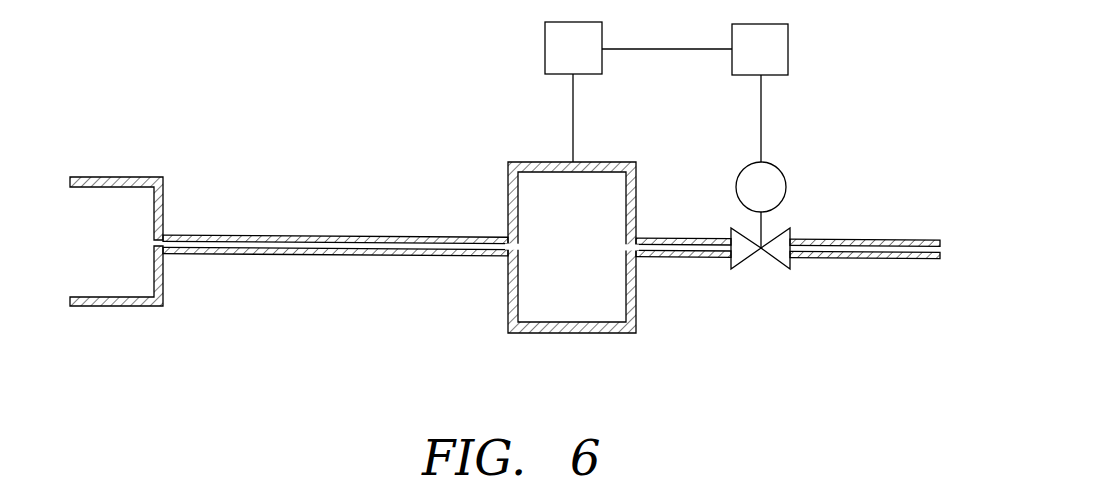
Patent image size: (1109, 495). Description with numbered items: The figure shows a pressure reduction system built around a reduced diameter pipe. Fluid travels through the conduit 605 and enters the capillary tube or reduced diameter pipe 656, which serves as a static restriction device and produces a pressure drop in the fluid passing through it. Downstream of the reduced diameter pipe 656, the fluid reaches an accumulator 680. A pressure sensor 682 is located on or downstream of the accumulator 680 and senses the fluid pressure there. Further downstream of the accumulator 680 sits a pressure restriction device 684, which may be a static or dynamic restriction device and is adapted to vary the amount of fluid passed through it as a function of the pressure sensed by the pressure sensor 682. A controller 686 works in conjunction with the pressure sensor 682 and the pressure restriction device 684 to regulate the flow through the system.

The conduit 605 is at (125, 213).
The reduced diameter pipe 656 is at (315, 235).
The accumulator 680 is at (597, 298).
The pressure sensor 682 is at (563, 50).
The pressure restriction device 684 is at (790, 228).
The controller 686 is at (760, 45).